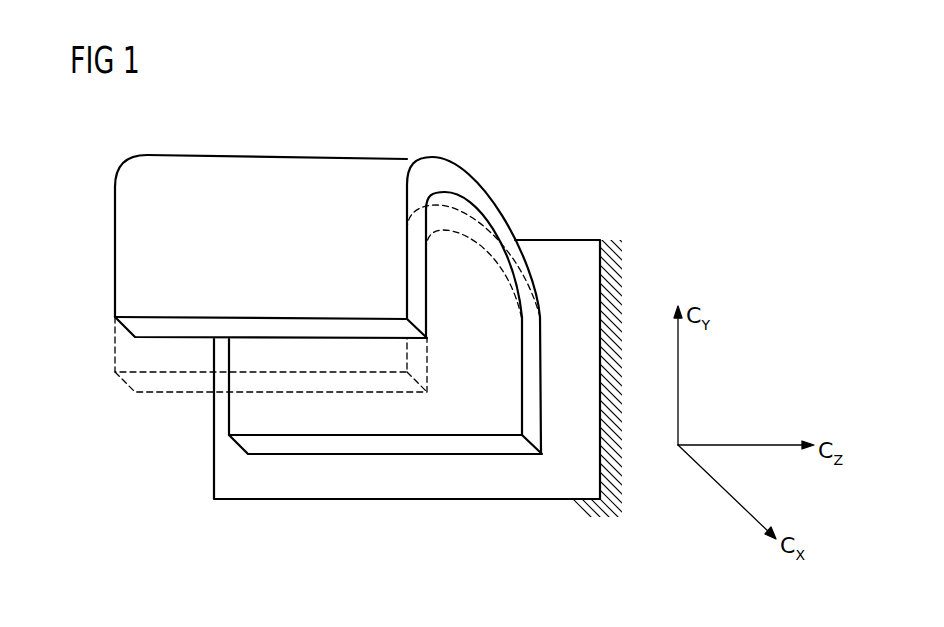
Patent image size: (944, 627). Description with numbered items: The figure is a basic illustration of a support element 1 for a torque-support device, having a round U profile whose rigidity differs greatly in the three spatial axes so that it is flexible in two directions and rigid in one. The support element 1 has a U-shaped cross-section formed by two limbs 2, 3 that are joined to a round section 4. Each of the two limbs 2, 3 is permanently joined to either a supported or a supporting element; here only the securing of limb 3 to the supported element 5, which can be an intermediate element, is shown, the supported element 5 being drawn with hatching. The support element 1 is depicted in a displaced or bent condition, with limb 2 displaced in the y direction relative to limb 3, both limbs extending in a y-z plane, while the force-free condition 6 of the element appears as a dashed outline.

The support element 1 is at (481, 146).
The limb 2 is at (418, 297).
The limb 3 is at (532, 395).
The round section 4 is at (492, 218).
The supported element 5 is at (567, 260).
The force-free condition 6 is at (153, 383).